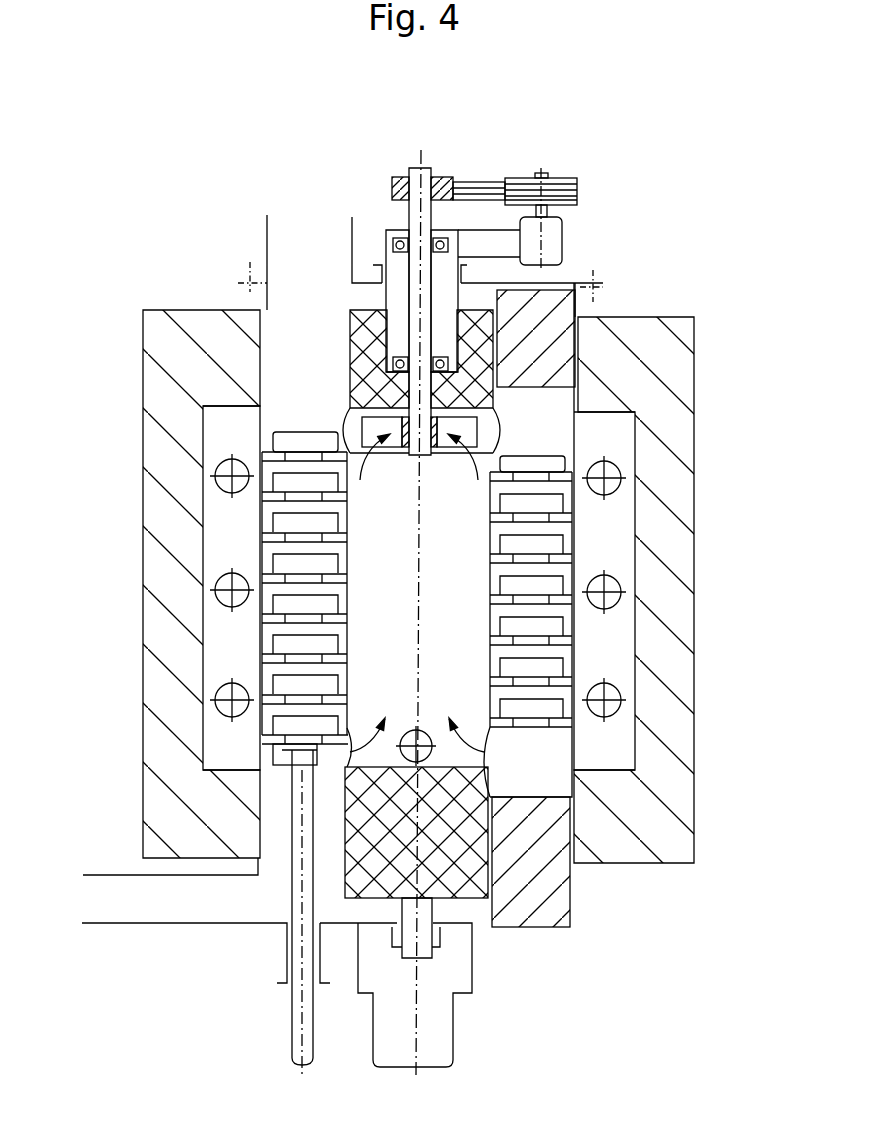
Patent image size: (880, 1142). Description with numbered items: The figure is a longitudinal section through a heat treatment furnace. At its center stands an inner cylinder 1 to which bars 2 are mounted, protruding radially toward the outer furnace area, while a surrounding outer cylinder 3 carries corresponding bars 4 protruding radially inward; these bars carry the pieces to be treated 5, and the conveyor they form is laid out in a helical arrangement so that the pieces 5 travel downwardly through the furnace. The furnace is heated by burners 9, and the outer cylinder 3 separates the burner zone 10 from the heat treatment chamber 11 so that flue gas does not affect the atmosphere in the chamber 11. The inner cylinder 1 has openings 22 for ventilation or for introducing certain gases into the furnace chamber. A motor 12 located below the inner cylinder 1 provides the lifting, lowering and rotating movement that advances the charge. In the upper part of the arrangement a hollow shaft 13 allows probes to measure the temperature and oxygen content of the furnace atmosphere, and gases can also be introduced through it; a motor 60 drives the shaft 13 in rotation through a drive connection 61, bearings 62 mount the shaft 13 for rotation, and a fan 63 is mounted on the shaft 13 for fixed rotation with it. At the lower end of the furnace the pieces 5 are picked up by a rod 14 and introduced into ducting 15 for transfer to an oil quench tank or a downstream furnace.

The inner cylinder 1 is at (490, 613).
The bars 2 is at (490, 548).
The outer cylinder 3 is at (258, 557).
The bars 4 is at (264, 548).
The pieces to be treated 5 is at (265, 740).
The burners 9 is at (243, 706).
The burner zone 10 is at (223, 648).
The heat treatment chamber 11 is at (232, 472).
The motor 12 is at (446, 1034).
The hollow shaft 13 is at (412, 168).
The rod 14 is at (295, 1037).
The ducting 15 is at (223, 912).
The openings 22 is at (347, 435).
The motor 60 is at (548, 240).
The drive connection 61 is at (478, 182).
The bearings 62 is at (405, 357).
The fan 63 is at (375, 447).